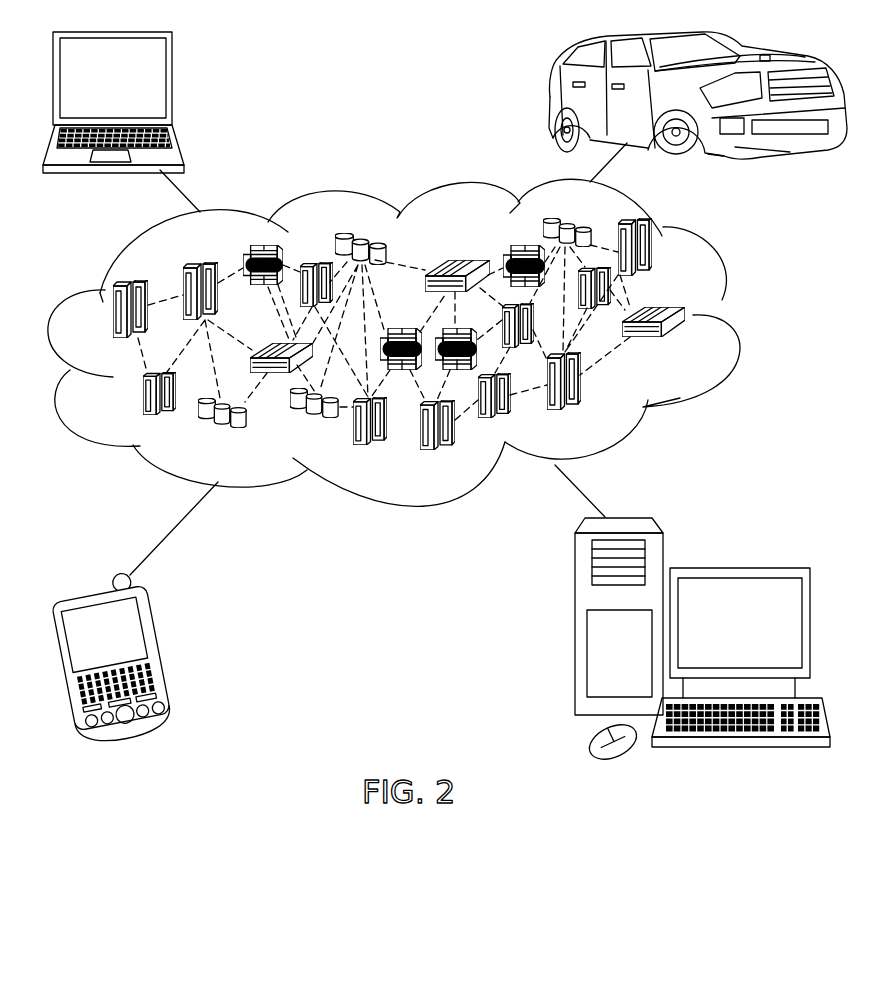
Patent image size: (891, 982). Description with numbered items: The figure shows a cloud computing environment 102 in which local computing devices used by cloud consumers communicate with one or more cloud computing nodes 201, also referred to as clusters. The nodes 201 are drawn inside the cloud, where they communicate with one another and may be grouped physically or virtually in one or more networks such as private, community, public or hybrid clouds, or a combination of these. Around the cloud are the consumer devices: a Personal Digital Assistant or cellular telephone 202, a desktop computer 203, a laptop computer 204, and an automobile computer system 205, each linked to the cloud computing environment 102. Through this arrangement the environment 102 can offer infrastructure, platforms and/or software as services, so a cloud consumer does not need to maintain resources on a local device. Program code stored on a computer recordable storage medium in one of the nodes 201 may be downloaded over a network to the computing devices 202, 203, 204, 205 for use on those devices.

The cloud computing environment 102 is at (740, 318).
The cloud computing nodes 201 is at (697, 347).
The Personal Digital Assistant (PDA) or cellular telephone 202 is at (163, 648).
The desktop computer 203 is at (737, 568).
The laptop computer 204 is at (173, 84).
The automobile computer system 205 is at (548, 98).